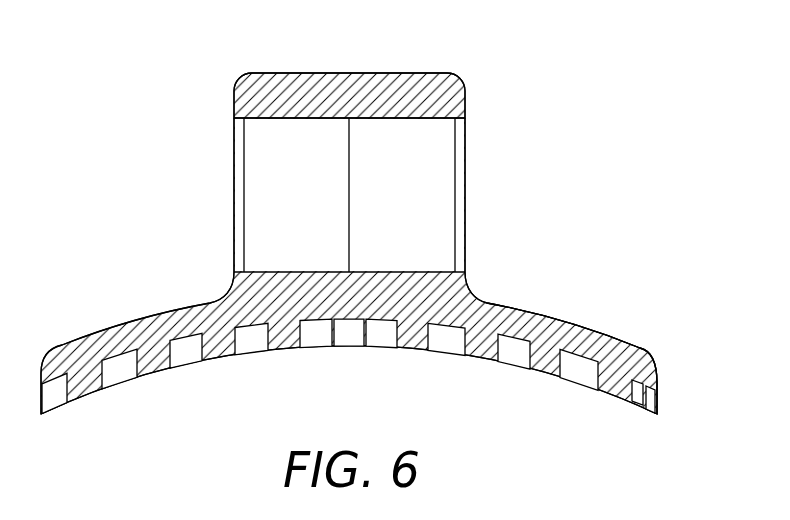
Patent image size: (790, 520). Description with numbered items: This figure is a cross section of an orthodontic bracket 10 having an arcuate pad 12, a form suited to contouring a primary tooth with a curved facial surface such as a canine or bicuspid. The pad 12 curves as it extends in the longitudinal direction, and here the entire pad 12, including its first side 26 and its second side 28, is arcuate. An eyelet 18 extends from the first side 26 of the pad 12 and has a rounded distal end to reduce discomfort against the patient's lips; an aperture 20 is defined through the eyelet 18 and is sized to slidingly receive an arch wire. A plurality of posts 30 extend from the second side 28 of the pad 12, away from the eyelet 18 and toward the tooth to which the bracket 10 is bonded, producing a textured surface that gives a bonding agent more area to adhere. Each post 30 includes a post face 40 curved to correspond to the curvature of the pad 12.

The bracket 10 is at (607, 88).
The pad 12 is at (643, 360).
The eyelet 18 is at (447, 87).
The aperture 20 is at (408, 178).
The first side 26 is at (558, 325).
The second side 28 is at (648, 413).
The posts 30 is at (482, 355).
The post face 40 is at (215, 360).